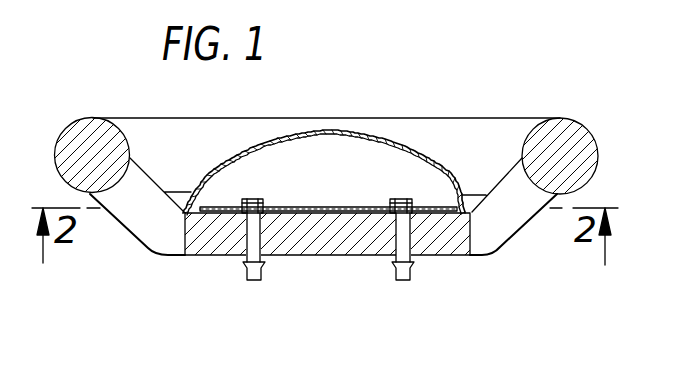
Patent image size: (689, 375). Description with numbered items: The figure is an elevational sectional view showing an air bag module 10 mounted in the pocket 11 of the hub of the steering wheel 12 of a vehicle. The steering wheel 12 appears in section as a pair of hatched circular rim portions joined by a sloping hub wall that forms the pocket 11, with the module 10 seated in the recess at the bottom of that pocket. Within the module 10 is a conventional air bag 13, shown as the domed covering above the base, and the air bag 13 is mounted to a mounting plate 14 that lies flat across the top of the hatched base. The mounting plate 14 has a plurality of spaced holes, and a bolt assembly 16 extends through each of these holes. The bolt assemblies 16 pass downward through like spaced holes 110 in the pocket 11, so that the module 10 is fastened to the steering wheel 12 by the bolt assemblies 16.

The air bag module 10 is at (407, 133).
The pocket 11 is at (296, 238).
The steering wheel 12 is at (588, 130).
The air bag 13 is at (333, 181).
The mounting plate 14 is at (216, 214).
The bolt assembly 16 is at (413, 272).
The spaced holes 110 is at (394, 238).